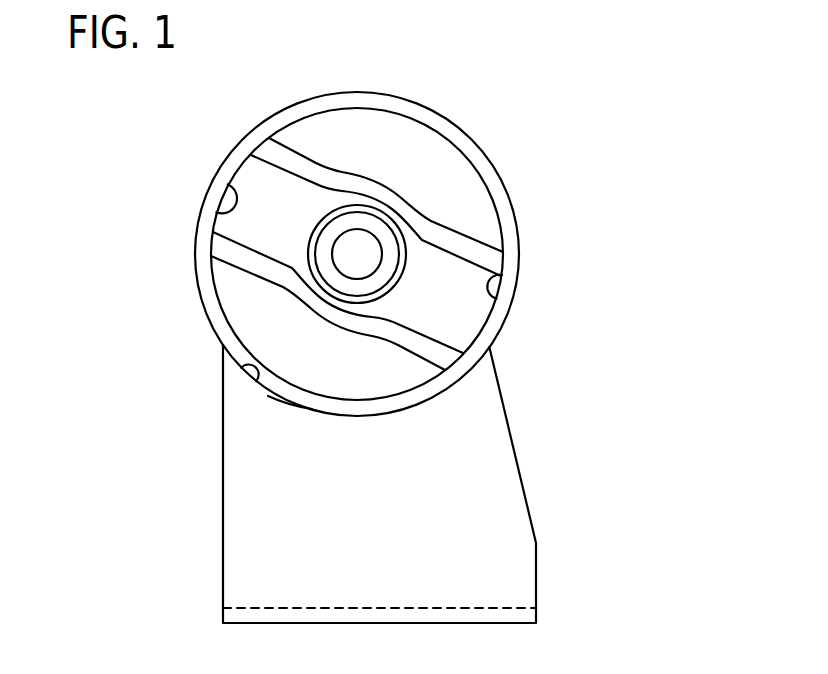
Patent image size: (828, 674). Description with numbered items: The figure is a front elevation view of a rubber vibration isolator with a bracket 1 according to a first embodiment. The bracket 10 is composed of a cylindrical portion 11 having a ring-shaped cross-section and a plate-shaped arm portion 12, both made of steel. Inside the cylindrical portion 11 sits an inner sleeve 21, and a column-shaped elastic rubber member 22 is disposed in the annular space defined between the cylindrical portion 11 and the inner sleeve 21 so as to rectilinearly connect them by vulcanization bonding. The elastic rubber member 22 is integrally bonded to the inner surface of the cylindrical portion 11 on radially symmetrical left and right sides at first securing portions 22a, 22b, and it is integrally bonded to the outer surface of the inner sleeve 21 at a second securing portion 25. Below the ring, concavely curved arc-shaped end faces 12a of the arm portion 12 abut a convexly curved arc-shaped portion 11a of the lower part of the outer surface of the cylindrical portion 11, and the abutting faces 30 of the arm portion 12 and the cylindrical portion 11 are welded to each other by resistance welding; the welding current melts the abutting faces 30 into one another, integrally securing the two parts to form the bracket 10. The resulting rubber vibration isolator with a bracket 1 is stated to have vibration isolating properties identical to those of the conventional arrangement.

The rubber vibration isolator with a bracket 1 is at (464, 117).
The bracket 10 is at (620, 315).
The cylindrical portion 11 is at (497, 319).
The arm portion 12 is at (487, 403).
The inner sleeve 21 is at (330, 232).
The elastic rubber member 22 is at (443, 263).
The first securing portion 22a is at (228, 209).
The first securing portion 22b is at (490, 278).
The second securing portion 25 is at (313, 275).
The abutting faces 30 is at (125, 400).
The end faces of the arm portion 12a is at (257, 382).
The outer surface of the cylindrical portion 11a is at (290, 402).